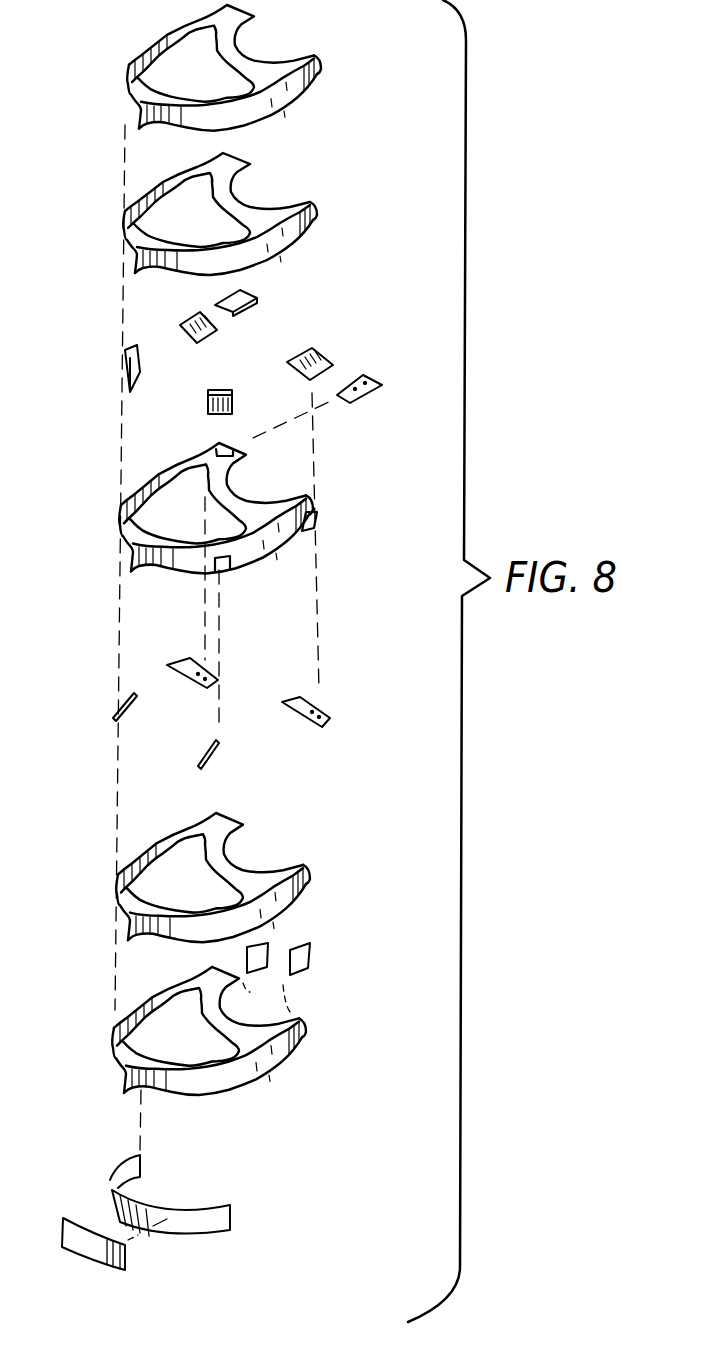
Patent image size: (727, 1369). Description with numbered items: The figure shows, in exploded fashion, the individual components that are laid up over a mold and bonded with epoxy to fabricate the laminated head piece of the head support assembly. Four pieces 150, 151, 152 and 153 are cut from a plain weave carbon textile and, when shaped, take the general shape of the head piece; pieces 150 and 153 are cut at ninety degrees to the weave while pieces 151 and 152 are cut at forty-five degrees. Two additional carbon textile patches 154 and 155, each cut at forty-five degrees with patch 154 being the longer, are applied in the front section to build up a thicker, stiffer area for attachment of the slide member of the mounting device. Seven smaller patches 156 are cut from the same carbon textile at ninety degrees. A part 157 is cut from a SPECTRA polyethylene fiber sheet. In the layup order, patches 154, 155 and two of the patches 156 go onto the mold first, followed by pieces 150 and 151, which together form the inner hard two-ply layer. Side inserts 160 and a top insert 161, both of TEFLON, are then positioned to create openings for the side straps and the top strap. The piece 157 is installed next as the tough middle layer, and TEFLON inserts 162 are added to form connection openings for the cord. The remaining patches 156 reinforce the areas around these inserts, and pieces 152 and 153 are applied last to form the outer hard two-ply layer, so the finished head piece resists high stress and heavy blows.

The carbon textile piece 150 is at (312, 1042).
The carbon textile piece 151 is at (312, 887).
The carbon textile piece 152 is at (318, 216).
The carbon textile piece 153 is at (322, 70).
The patch 154 is at (232, 1212).
The patch 155 is at (127, 1263).
The patches 156 is at (130, 345).
The polyethylene fiber sheet part 157 is at (318, 528).
The side inserts 160 is at (219, 680).
The top insert 161 is at (382, 377).
The inserts 162 is at (200, 753).